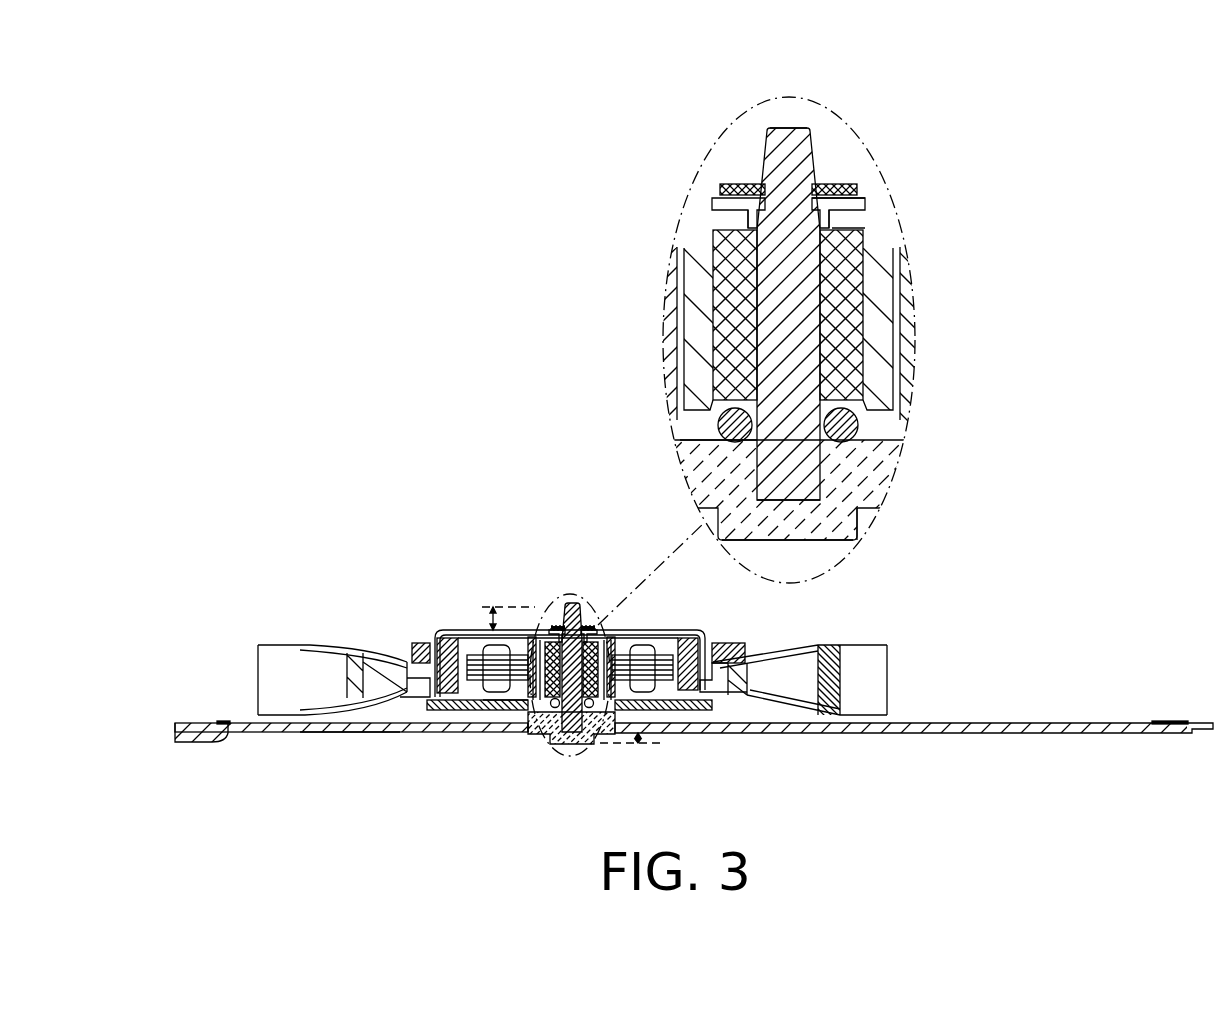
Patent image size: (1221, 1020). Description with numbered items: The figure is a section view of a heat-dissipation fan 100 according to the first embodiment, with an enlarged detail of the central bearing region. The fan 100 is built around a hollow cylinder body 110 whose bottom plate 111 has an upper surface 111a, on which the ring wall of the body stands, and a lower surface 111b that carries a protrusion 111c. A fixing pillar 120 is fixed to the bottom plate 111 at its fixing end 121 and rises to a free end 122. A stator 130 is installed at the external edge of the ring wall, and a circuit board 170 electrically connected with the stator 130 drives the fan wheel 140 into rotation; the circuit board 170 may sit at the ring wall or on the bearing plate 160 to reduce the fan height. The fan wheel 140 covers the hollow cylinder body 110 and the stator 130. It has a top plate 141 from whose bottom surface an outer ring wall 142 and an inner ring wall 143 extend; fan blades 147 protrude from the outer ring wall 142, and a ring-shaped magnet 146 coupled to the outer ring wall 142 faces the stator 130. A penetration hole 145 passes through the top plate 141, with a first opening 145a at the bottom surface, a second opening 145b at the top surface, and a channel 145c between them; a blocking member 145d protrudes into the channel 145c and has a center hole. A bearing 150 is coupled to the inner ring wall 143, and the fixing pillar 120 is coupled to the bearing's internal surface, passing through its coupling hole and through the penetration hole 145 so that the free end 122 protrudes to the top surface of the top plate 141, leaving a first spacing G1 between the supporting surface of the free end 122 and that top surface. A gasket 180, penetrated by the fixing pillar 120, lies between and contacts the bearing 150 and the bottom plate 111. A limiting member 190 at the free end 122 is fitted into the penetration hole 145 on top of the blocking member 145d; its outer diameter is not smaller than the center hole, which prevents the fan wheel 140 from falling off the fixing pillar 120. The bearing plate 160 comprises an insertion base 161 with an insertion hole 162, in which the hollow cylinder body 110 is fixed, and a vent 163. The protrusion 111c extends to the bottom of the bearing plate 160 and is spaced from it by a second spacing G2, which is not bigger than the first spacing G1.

The heat-dissipation fan 100 is at (290, 560).
The hollow cylinder body 110 is at (645, 702).
The bottom plate 111 is at (575, 745).
The upper surface 111a is at (700, 432).
The lower surface 111b is at (822, 540).
The protrusion 111c is at (828, 528).
The fixing pillar 120 is at (572, 610).
The fixing end 121 is at (785, 490).
The free end 122 is at (793, 153).
The stator 130 is at (650, 656).
The fan wheel 140 is at (905, 667).
The top plate 141 is at (530, 640).
The outer ring wall 142 is at (432, 645).
The inner ring wall 143 is at (558, 640).
The penetration hole 145 is at (878, 204).
The first opening 145a is at (867, 230).
The second opening 145b is at (866, 196).
The channel 145c is at (735, 216).
The blocking member 145d is at (843, 220).
The ring-shaped magnet 146 is at (445, 638).
The fan blades 147 is at (278, 660).
The bearing 150 is at (553, 700).
The bearing plate 160 is at (1105, 712).
The insertion base 161 is at (512, 711).
The insertion hole 162 is at (530, 727).
The vent 163 is at (351, 728).
The circuit board 170 is at (452, 710).
The gasket 180 is at (600, 706).
The limiting member 190 is at (590, 627).
The first spacing G1 is at (497, 591).
The second spacing G2 is at (630, 769).